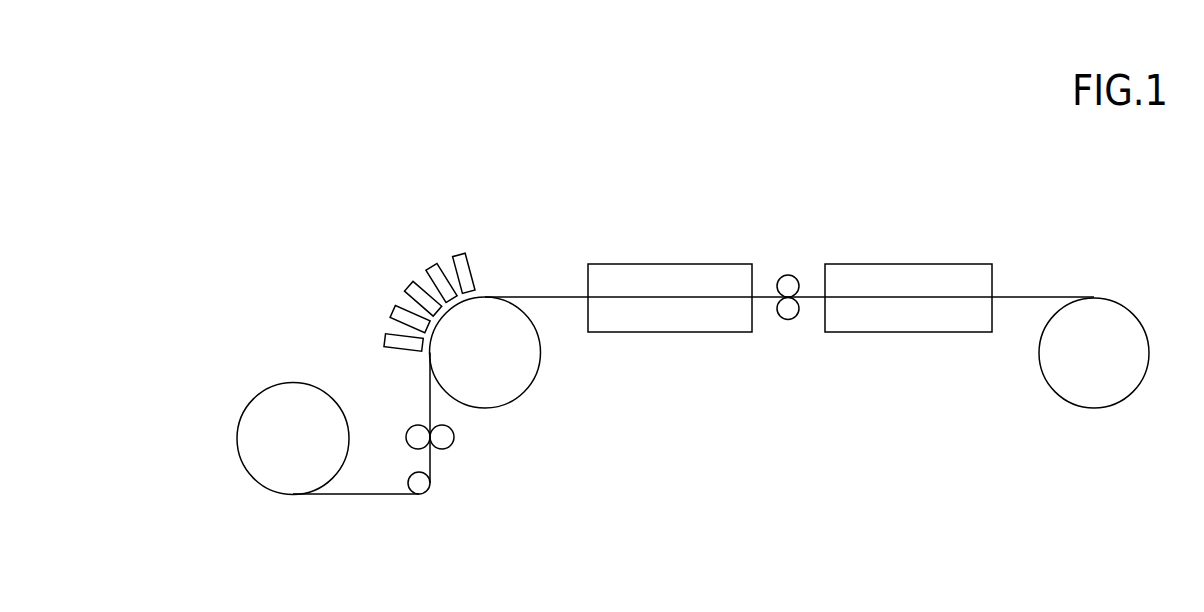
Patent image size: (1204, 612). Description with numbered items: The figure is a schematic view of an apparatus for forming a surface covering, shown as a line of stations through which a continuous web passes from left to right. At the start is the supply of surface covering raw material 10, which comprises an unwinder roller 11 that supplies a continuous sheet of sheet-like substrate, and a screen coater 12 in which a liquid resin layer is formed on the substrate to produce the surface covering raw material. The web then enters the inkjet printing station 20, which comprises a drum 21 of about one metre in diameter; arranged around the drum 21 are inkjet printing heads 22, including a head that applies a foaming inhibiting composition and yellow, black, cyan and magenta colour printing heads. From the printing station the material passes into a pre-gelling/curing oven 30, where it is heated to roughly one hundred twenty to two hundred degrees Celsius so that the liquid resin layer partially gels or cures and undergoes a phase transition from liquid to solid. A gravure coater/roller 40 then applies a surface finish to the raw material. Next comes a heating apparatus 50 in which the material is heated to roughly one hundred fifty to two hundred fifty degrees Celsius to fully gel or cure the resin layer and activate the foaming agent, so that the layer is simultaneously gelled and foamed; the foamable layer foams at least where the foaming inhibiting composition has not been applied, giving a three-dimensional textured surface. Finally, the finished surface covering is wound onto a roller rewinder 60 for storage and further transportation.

The supply of surface covering raw material 10 is at (333, 479).
The unwinder roller 11 is at (225, 457).
The screen coater 12 is at (449, 467).
The inkjet printing station 20 is at (449, 348).
The drum 21 is at (509, 414).
The inkjet printing heads 22 is at (450, 254).
The pre-gelling/curing oven 30 is at (681, 343).
The gravure coater/roller 40 is at (783, 330).
The heating apparatus 50 is at (924, 342).
The roller rewinder 60 is at (1068, 418).